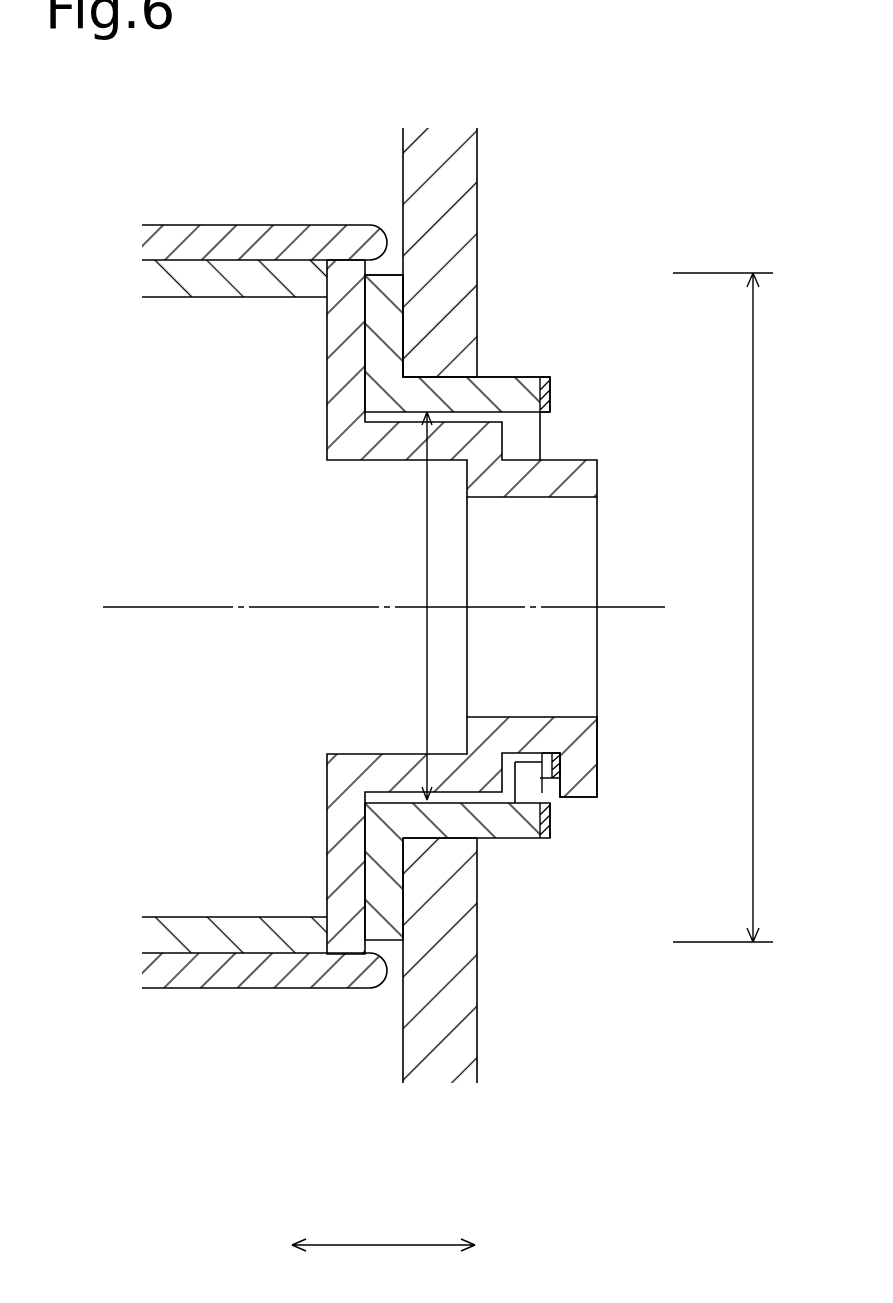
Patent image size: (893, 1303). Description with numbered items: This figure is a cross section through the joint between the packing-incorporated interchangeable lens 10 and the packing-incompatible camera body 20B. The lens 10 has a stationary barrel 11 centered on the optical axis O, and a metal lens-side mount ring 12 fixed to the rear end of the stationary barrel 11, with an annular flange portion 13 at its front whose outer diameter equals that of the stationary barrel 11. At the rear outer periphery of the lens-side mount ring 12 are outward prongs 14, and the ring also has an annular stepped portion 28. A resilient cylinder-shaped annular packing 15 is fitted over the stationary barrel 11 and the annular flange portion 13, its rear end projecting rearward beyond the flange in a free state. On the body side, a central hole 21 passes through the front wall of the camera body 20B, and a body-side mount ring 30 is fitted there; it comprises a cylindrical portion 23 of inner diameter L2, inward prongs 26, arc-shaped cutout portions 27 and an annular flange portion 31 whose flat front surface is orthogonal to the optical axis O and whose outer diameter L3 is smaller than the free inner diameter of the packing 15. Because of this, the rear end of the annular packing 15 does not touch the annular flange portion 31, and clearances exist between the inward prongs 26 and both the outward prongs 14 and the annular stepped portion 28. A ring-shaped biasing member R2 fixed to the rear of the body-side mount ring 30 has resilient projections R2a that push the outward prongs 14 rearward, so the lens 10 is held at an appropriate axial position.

The packing-incorporated interchangeable lens 10 is at (125, 166).
The stationary barrel 11 is at (232, 267).
The lens-side mount ring 12 is at (466, 778).
The annular flange portion 13 is at (343, 275).
The outward prongs 14 is at (590, 780).
The annular packing 15 is at (248, 977).
The packing-incompatible camera body 20B is at (389, 120).
The central hole 21 is at (450, 386).
The cylindrical portion 23 is at (492, 377).
The inward prongs 26 is at (560, 777).
The arc-shaped cutout portions 27 is at (545, 432).
The annular stepped portion 28 is at (541, 836).
The body-side mount ring 30 is at (538, 392).
The annular flange portion 31 is at (380, 342).
The optical axis O is at (178, 607).
The inner diameter of the cylindrical portion L2 is at (410, 606).
The outer diameter of the annular flange portion L3 is at (737, 607).
The ring-shaped biasing member R2 is at (550, 822).
The resilient projections R2a is at (557, 762).